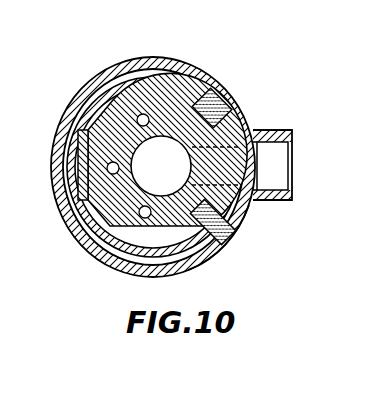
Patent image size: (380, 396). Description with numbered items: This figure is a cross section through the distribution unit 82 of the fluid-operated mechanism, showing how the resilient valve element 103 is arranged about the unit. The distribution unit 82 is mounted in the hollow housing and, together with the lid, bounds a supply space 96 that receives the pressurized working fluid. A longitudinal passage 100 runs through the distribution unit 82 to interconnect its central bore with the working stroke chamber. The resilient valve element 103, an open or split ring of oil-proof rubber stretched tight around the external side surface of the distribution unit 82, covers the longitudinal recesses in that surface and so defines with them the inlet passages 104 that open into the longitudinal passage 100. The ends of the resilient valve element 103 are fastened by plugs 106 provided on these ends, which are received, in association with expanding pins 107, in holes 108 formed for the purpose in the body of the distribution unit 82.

The resilient valve element 103 is at (98, 98).
The holes 108 is at (196, 85).
The expanding pins 107 is at (230, 121).
The plugs 106 is at (244, 126).
The inlet passages 104 is at (100, 165).
The longitudinal passage 100 is at (70, 190).
The supply space 96 is at (244, 197).
The distribution unit 82 is at (194, 246).